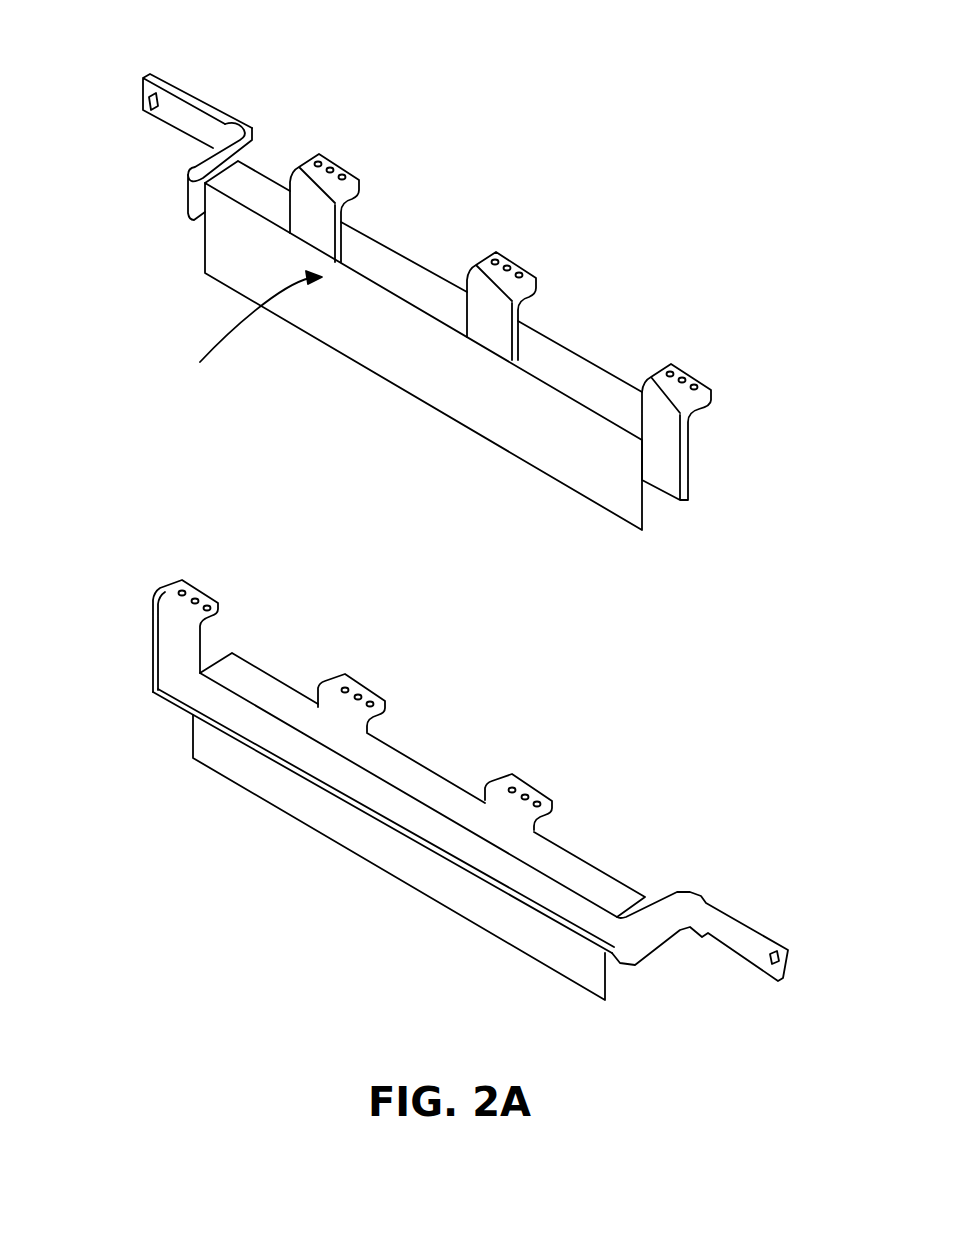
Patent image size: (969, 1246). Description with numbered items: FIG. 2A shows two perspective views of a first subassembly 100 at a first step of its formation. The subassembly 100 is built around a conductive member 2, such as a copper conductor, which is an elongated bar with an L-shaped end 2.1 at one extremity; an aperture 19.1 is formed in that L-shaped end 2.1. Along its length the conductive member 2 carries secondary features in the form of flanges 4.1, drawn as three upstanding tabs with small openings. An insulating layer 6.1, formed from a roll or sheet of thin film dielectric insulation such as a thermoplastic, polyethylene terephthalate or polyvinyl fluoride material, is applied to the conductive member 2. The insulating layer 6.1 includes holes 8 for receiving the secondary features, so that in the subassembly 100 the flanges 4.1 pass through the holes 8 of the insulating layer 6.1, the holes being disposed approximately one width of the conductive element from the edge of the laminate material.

The first subassembly 100 is at (288, 413).
The conductive member 2 is at (407, 492).
The L-shaped end 2.1 is at (164, 78).
The aperture 19.1 is at (148, 100).
The flanges 4.1 is at (354, 175).
The insulating layer 6.1 is at (612, 502).
The holes 8 is at (239, 318).